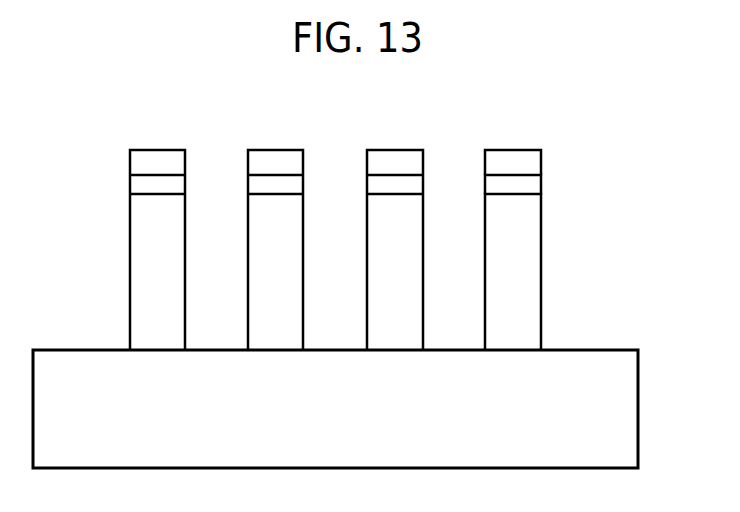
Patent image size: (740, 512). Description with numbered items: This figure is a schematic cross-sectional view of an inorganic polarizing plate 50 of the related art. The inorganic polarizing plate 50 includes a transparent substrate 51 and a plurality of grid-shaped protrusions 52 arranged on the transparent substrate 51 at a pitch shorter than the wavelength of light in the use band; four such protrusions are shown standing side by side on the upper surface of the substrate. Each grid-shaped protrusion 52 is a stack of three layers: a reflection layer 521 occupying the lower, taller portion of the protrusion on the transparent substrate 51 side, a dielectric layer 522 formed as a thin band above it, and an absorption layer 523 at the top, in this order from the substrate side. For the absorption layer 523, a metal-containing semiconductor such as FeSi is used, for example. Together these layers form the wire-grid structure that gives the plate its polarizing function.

The inorganic polarizing plate 50 is at (600, 117).
The transparent substrate 51 is at (627, 413).
The grid-shaped protrusion 52 is at (627, 150).
The reflection layer 521 is at (533, 232).
The dielectric layer 522 is at (533, 186).
The absorption layer 523 is at (533, 160).